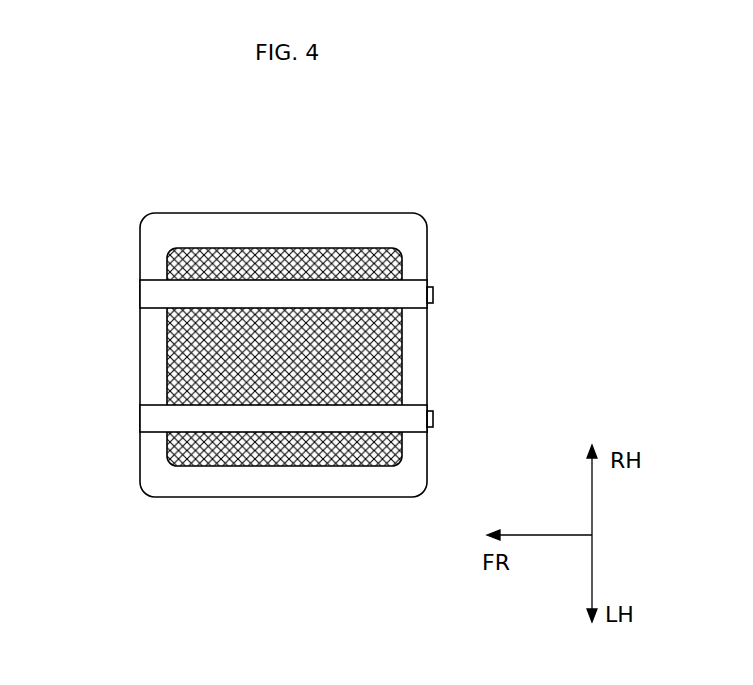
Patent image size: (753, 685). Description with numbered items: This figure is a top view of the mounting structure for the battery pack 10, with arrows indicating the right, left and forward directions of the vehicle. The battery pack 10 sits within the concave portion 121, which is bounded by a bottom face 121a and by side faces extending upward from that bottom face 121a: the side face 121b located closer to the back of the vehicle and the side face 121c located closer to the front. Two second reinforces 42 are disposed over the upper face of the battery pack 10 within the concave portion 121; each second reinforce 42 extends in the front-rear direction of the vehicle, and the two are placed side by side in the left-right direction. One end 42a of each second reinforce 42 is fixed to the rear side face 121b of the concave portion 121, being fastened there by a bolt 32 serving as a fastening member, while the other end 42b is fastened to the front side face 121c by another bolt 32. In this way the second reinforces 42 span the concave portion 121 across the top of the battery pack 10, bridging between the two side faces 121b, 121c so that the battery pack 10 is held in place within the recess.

The battery pack 10 is at (348, 242).
The bolt 32 is at (435, 297).
The second reinforce 42 is at (256, 298).
The one end of the second reinforce 42a is at (420, 296).
The other end of the second reinforce 42b is at (157, 297).
The concave portion 121 is at (275, 502).
The bottom face of the concave portion 121a is at (182, 480).
The side face of the concave portion 121b is at (428, 355).
The side face of the concave portion 121c is at (141, 349).